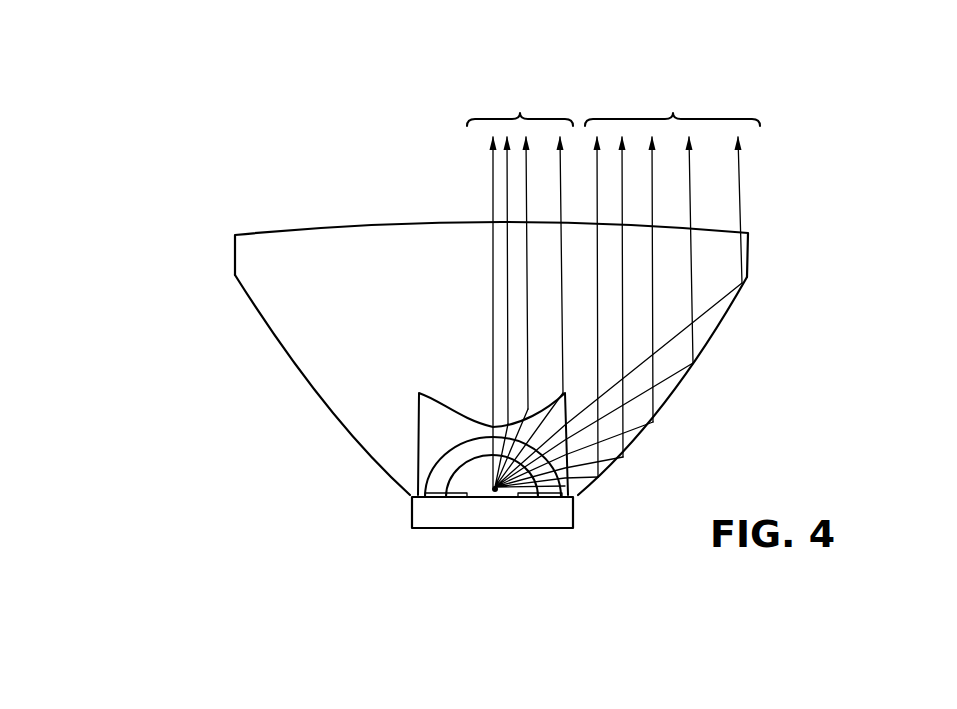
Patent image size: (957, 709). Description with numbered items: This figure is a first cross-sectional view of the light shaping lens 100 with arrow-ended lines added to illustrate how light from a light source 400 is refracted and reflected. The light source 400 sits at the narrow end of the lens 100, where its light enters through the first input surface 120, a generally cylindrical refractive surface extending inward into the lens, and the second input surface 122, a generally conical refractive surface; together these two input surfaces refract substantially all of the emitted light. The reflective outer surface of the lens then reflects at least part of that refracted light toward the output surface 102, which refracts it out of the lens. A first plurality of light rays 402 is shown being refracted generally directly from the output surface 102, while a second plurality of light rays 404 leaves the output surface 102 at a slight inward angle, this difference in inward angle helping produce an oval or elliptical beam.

The light shaping lens 100 is at (170, 290).
The output surface 102 is at (265, 232).
The first input surface 120 is at (413, 455).
The second input surface 122 is at (450, 403).
The light source 400 is at (437, 530).
The first plurality of light rays 402 is at (520, 115).
The second plurality of light rays 404 is at (673, 115).